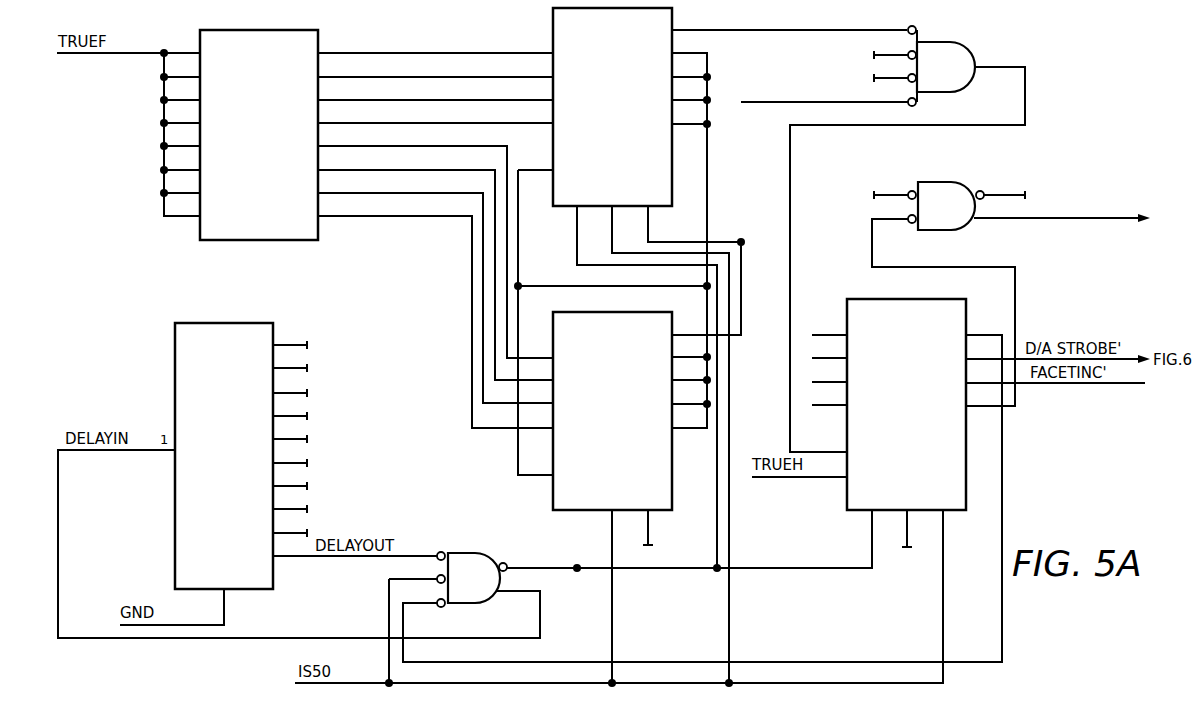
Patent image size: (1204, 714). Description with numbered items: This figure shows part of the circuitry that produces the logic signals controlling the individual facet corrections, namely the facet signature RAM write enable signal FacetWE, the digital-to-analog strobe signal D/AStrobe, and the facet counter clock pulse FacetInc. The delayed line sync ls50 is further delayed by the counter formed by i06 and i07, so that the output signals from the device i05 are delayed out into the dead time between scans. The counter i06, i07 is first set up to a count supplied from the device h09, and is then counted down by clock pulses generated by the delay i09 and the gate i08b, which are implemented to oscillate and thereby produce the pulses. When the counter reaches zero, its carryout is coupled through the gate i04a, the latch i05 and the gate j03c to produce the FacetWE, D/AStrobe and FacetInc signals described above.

The device h09 is at (292, 128).
The counter i06 is at (610, 118).
The counter i07 is at (611, 422).
The latch i05 is at (899, 417).
The delay i09 is at (279, 467).
The gate i04a is at (932, 60).
The gate j03c is at (1035, 190).
The gate i08b is at (456, 599).